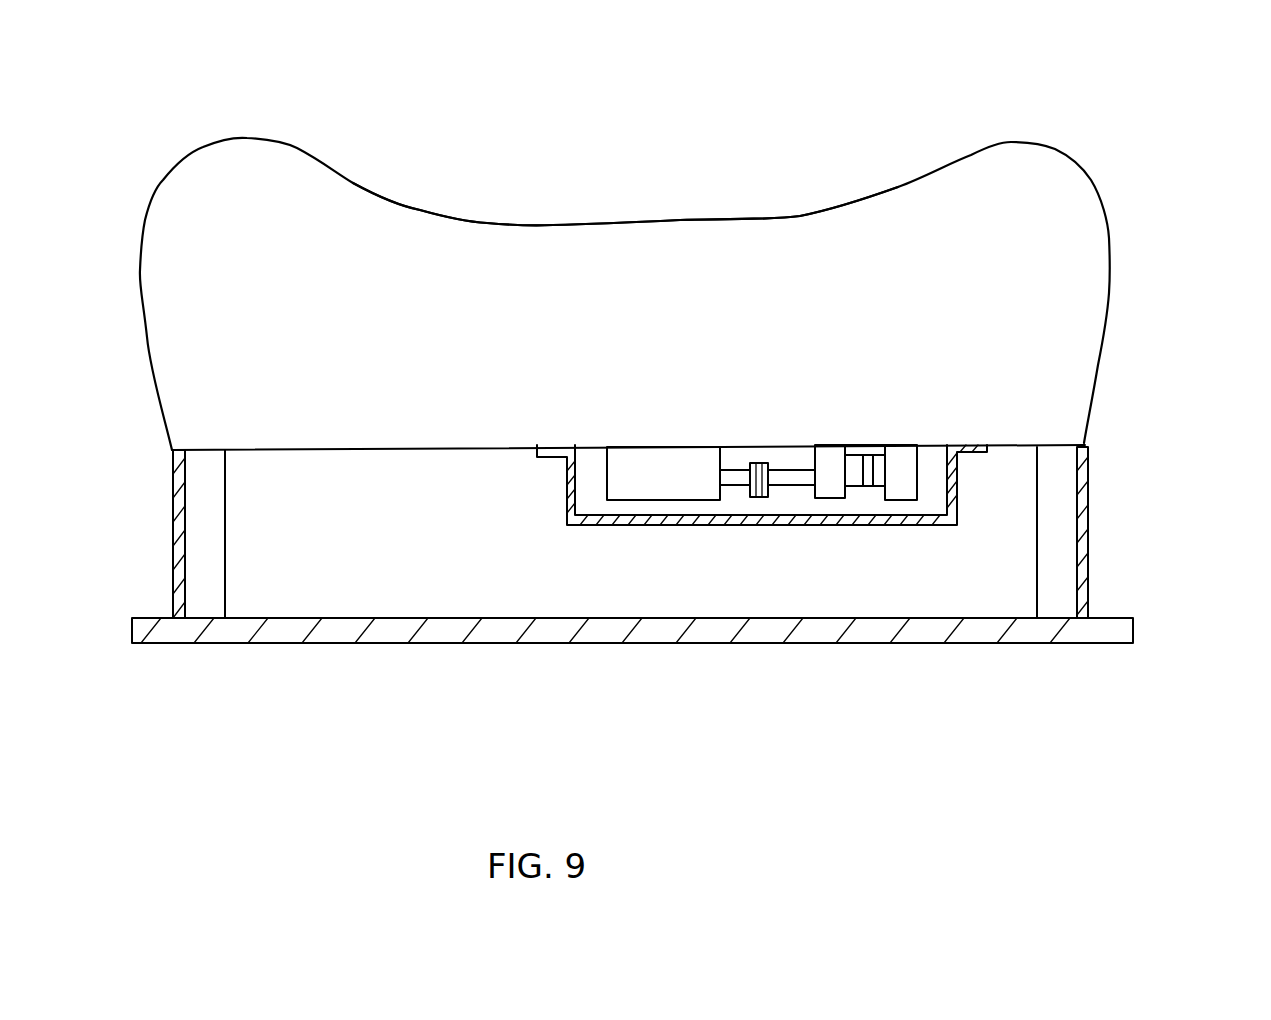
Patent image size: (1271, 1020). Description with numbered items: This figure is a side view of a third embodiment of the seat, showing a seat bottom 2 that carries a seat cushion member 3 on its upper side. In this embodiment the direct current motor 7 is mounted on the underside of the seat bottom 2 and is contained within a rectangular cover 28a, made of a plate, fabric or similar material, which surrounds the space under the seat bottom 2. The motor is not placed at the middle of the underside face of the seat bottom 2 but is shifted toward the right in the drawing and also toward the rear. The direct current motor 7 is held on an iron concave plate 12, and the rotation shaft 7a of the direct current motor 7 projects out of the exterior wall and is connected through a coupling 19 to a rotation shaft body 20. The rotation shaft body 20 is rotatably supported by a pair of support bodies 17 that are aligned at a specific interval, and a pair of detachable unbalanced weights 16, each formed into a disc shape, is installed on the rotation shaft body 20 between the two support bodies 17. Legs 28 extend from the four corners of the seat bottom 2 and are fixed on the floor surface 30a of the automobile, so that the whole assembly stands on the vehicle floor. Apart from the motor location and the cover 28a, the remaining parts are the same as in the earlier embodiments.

The seat bottom 2 is at (1116, 202).
The seat cushion member 3 is at (789, 260).
The direct current motor 7 is at (632, 488).
The rotation shaft 7a is at (737, 483).
The concave plate 12 is at (677, 520).
The unbalanced weight 16 is at (850, 485).
The support body 17 is at (832, 492).
The coupling 19 is at (760, 504).
The rotation shaft body 20 is at (790, 480).
The leg 28 is at (213, 592).
The cover 28a is at (1088, 500).
The floor surface 30a is at (1110, 613).